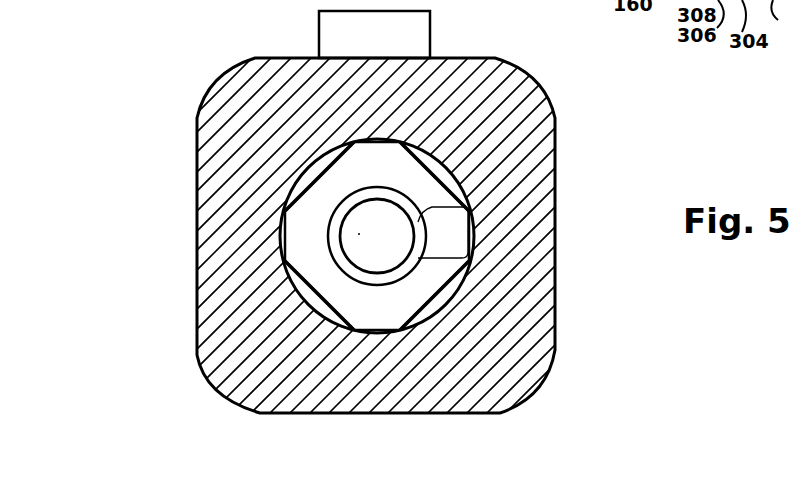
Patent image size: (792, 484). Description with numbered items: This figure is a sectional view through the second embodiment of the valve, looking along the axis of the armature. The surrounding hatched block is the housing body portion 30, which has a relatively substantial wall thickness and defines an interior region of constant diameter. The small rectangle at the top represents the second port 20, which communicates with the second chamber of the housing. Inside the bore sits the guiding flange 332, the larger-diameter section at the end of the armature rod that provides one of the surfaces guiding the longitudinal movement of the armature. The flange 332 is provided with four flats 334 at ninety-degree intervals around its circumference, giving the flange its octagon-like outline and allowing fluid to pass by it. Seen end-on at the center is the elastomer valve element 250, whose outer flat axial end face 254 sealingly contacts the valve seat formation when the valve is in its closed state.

The second port 20 is at (308, 30).
The body portion 30 is at (196, 130).
The guiding flange 332 is at (425, 297).
The flats 334 is at (310, 186).
The valve element 250 is at (468, 252).
The outer flat axial end face 254 is at (396, 226).